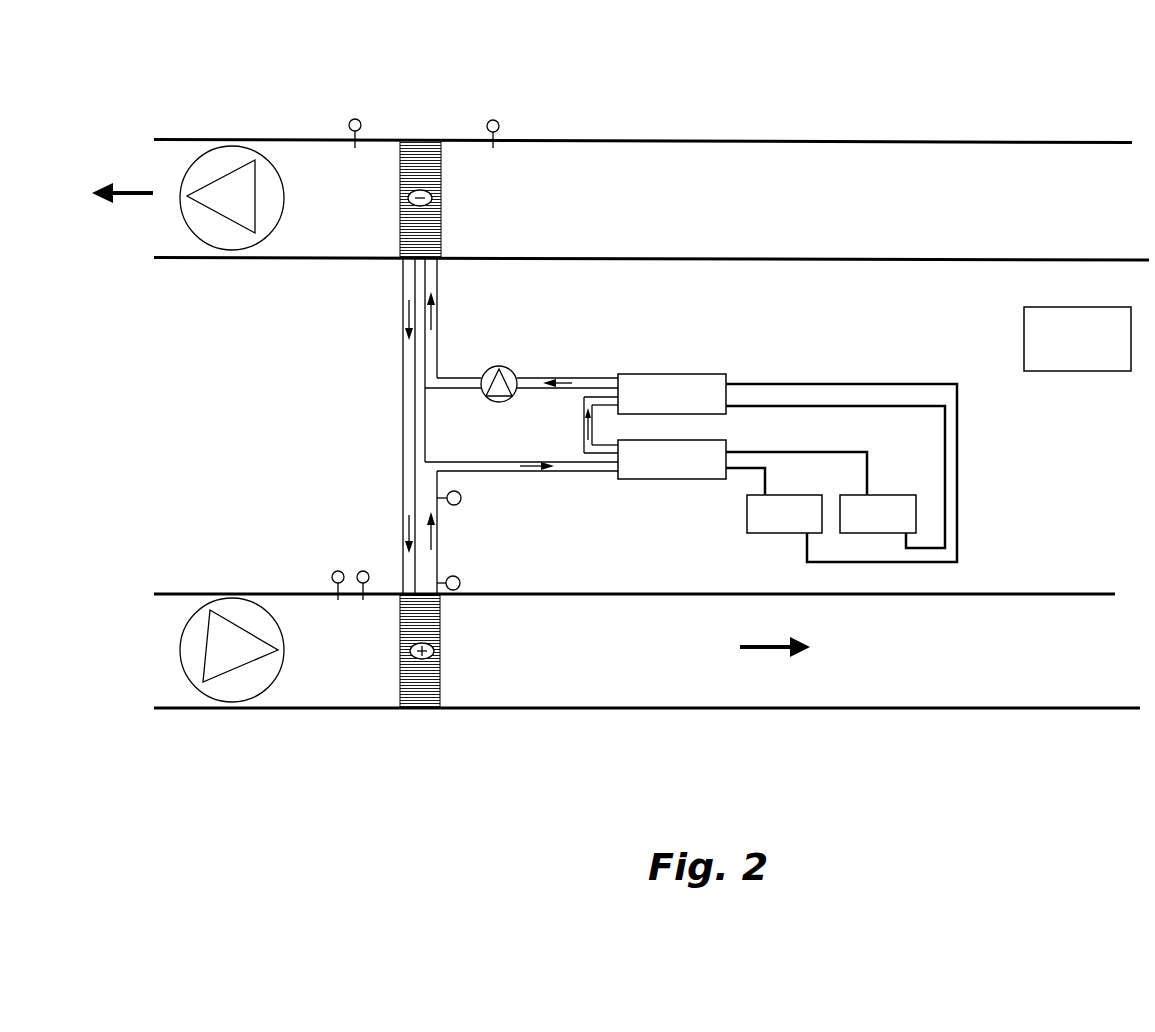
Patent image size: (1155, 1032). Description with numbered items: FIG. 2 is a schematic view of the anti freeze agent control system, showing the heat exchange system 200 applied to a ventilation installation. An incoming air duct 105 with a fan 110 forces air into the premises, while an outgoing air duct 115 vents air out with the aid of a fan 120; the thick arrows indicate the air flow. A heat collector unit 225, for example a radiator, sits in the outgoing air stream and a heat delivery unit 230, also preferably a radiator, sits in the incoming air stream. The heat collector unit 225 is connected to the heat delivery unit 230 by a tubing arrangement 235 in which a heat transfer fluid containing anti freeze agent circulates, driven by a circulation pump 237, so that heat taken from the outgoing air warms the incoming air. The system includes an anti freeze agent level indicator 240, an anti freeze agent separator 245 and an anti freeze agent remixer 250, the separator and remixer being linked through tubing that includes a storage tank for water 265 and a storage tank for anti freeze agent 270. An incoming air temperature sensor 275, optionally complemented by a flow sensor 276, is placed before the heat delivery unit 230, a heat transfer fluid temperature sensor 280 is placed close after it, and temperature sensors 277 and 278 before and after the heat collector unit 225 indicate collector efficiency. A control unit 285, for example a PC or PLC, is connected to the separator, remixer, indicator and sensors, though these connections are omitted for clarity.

The heat exchange system 200 is at (198, 72).
The incoming air duct 105 is at (299, 130).
The fan 110 is at (216, 142).
The outgoing air duct 115 is at (311, 588).
The fan 120 is at (219, 594).
The heat collector unit 225 is at (421, 134).
The heat delivery unit 230 is at (424, 712).
The tubing arrangement 235 is at (396, 355).
The circulation pump 237 is at (498, 362).
The anti freeze agent level indicator 240 is at (462, 500).
The anti freeze agent separator 245 is at (664, 364).
The anti freeze agent remixer 250 is at (664, 484).
The storage tank for water 265 is at (766, 537).
The storage tank for anti freeze agent 270 is at (880, 538).
The incoming air temperature sensor 275 is at (335, 565).
The flow sensor 276 is at (363, 558).
The temperature sensor 277 is at (353, 110).
The temperature sensor 278 is at (491, 110).
The heat transfer fluid temperature sensor 280 is at (462, 580).
The control unit 285 is at (1016, 331).